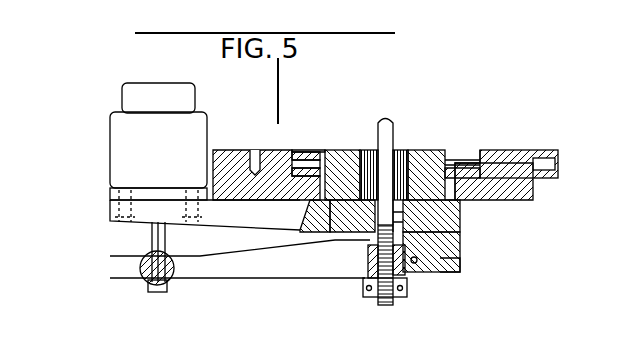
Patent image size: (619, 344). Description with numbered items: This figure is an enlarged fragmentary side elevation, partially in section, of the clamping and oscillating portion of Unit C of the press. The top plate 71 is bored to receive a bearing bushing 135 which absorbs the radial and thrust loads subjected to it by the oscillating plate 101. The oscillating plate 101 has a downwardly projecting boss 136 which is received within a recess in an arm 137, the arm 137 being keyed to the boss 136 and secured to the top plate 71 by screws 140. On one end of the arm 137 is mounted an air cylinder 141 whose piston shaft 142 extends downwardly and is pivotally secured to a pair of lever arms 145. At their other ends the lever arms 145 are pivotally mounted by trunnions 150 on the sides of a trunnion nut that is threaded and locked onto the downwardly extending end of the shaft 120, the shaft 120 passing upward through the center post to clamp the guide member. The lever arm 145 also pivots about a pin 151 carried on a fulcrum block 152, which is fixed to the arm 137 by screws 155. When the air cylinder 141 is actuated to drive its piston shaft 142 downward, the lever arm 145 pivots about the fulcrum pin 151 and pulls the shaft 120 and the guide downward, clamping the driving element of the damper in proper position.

The top plate 71 is at (241, 155).
The oscillating plate 101 is at (341, 160).
The shaft 120 is at (381, 121).
The bearing bushing 135 is at (307, 158).
The boss 136 is at (332, 206).
The arm 137 is at (259, 221).
The screws 140 is at (462, 216).
The air cylinder 141 is at (165, 153).
The piston shaft 142 is at (152, 243).
The lever arms 145 is at (275, 272).
The trunnions 150 is at (371, 262).
The pin 151 is at (417, 263).
The fulcrum block 152 is at (462, 240).
The screws 155 is at (452, 274).